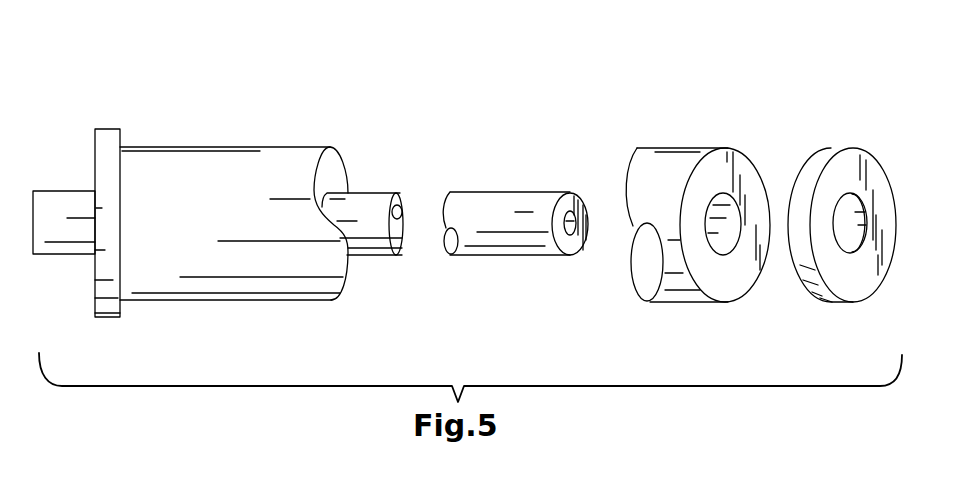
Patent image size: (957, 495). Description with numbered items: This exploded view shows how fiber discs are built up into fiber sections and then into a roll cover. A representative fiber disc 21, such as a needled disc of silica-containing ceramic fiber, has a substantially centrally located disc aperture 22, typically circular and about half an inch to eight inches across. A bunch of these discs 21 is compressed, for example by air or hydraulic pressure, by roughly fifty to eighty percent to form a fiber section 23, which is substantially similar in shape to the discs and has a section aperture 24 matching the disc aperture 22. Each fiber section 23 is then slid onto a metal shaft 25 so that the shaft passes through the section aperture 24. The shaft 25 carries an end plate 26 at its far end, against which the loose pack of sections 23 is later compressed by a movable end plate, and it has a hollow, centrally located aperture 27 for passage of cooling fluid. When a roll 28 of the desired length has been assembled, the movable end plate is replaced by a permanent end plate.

The fiber disc 21 is at (840, 150).
The disc aperture 22 is at (848, 255).
The fiber section 23 is at (682, 148).
The section aperture 24 is at (723, 258).
The metal shaft 25 is at (502, 190).
The end plate 26 is at (113, 130).
The aperture 27 is at (571, 237).
The roll 28 is at (242, 100).